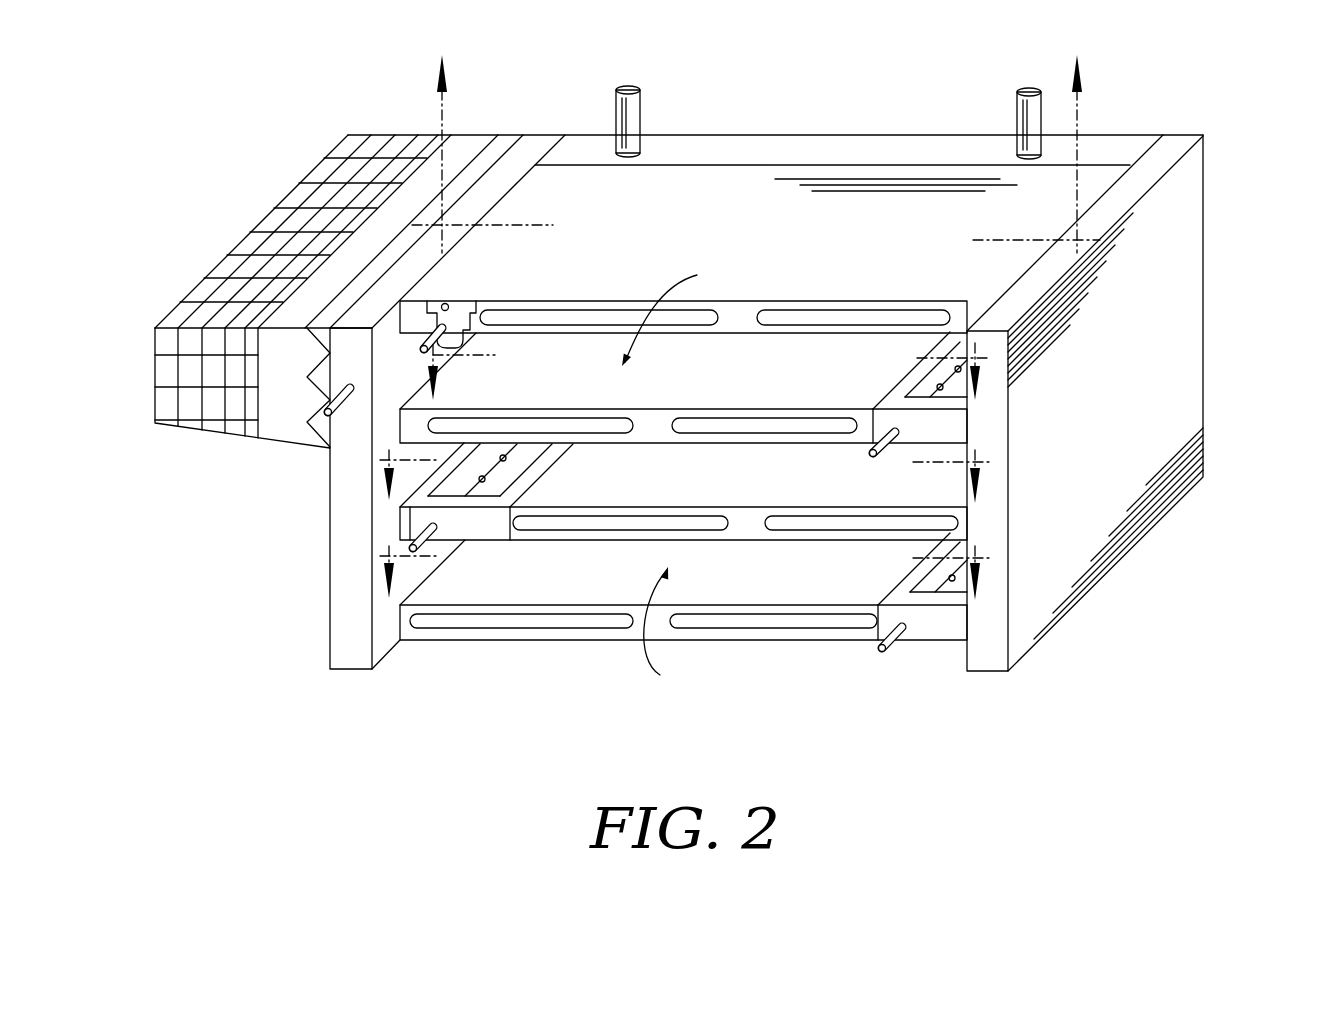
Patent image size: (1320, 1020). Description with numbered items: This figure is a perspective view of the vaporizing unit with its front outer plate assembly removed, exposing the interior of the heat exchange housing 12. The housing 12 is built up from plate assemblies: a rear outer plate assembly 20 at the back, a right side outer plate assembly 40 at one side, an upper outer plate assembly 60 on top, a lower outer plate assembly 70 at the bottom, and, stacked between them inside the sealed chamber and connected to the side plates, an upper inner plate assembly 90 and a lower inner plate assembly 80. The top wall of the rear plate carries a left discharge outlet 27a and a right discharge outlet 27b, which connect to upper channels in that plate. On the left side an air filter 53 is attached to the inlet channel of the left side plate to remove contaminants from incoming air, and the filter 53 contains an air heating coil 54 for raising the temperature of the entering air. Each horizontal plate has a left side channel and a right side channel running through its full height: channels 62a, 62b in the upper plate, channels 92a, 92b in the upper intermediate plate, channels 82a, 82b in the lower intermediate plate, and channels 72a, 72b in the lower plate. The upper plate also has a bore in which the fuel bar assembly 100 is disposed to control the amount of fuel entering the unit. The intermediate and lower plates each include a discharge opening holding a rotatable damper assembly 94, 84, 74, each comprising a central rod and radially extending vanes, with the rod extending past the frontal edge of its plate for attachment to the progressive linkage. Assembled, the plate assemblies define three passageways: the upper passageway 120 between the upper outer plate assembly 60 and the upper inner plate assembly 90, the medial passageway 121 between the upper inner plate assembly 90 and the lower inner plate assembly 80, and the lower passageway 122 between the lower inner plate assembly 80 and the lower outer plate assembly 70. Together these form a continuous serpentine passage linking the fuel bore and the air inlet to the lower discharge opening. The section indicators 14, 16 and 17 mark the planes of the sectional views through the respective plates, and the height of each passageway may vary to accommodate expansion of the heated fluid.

The heat exchange housing 12 is at (820, 363).
The section line 14 is at (698, 574).
The section line 16 is at (679, 479).
The section line 17 is at (721, 373).
The rear outer plate assembly 20 is at (775, 124).
The left discharge outlet 27a is at (669, 86).
The right discharge outlet 27b is at (990, 92).
The right side outer plate assembly 40 is at (1154, 403).
The air filter 53 is at (247, 343).
The air heating coil 54 is at (326, 231).
The upper outer plate assembly 60 is at (683, 185).
The left side channel 62a is at (599, 289).
The right side channel 62b is at (853, 286).
The lower outer plate assembly 70 is at (683, 619).
The left side channel 72a is at (521, 656).
The right side channel 72b is at (773, 595).
The damper assembly 74 is at (900, 616).
The lower inner plate assembly 80 is at (683, 491).
The left side channel 82a is at (620, 500).
The right side channel 82b is at (861, 499).
The damper assembly 84 is at (411, 499).
The upper inner plate assembly 90 is at (683, 388).
The left side channel 92a is at (530, 403).
The right side channel 92b is at (764, 399).
The damper assembly 94 is at (894, 370).
The fuel bar assembly 100 is at (481, 298).
The upper passageway 120 is at (682, 312).
The medial passageway 121 is at (980, 445).
The lower passageway 122 is at (677, 631).